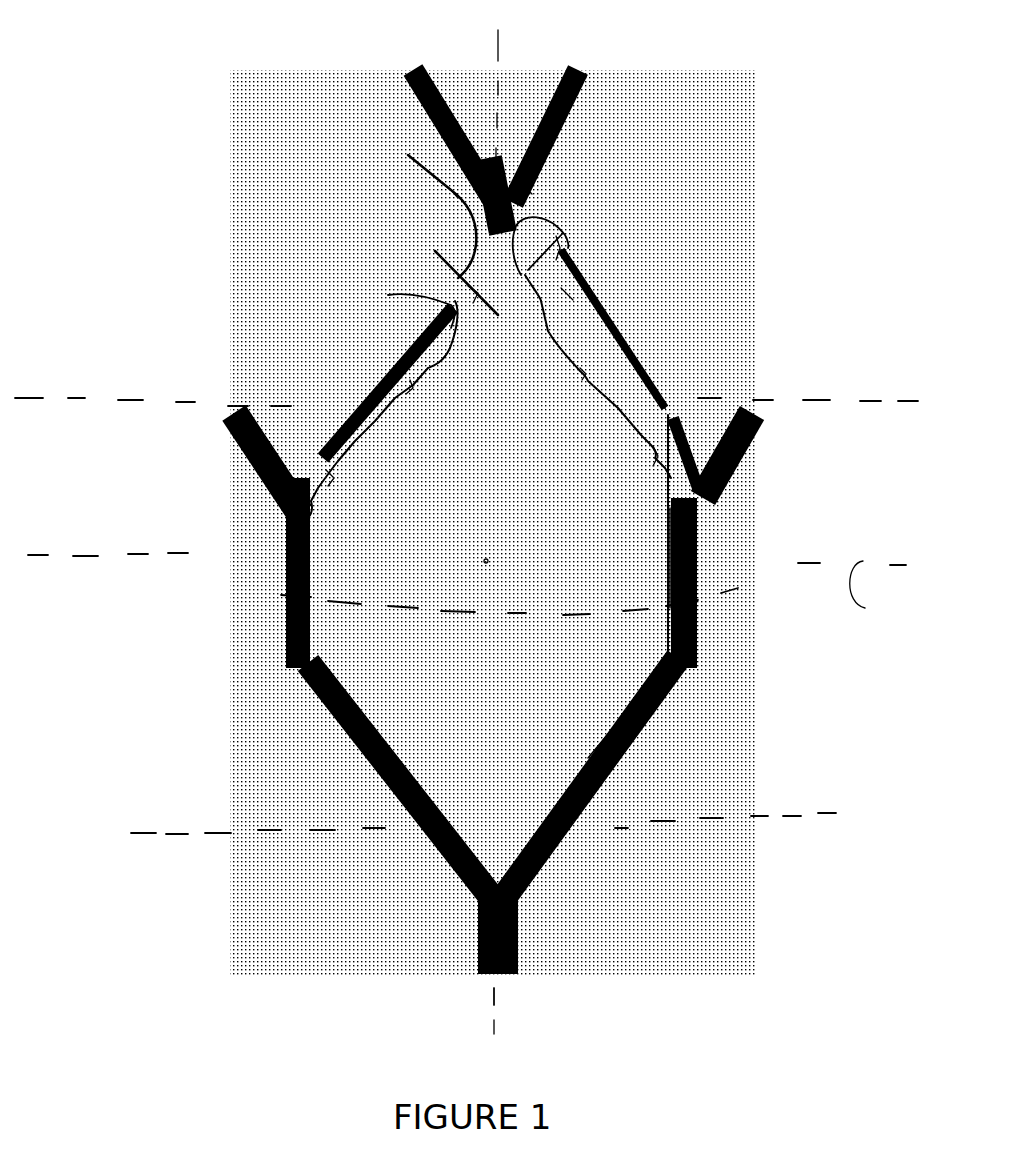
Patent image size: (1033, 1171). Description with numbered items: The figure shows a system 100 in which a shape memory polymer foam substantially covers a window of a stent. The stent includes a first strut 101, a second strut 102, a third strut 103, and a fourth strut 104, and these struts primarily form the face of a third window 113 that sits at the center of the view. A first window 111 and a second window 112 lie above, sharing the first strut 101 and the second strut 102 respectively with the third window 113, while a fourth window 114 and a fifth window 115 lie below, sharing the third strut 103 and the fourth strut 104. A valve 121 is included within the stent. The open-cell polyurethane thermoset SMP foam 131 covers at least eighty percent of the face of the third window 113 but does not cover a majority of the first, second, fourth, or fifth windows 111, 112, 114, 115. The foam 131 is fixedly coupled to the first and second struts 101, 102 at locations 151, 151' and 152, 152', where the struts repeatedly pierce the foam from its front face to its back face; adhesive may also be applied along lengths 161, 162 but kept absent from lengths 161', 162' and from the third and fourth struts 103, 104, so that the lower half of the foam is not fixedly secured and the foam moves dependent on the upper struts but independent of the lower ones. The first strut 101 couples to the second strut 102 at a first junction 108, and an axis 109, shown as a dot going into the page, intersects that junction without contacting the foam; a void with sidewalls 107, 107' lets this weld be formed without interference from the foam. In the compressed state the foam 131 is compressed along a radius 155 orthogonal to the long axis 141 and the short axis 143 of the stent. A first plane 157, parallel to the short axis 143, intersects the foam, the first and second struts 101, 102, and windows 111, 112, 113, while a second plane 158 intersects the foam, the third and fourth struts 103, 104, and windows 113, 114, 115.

The system 100 is at (867, 171).
The first strut 101 is at (458, 237).
The second strut 102 is at (515, 218).
The third strut 103 is at (352, 750).
The fourth strut 104 is at (608, 777).
The sidewall 107 is at (398, 153).
The sidewall 107' is at (670, 147).
The first junction 108 is at (518, 177).
The axis 109 is at (520, 181).
The first window 111 is at (312, 250).
The second window 112 is at (680, 126).
The third window 113 is at (680, 563).
The fourth window 114 is at (327, 898).
The fifth window 115 is at (665, 895).
The valve 121 is at (242, 576).
The SMP foam 131 is at (532, 469).
The long axis 141 is at (483, 1020).
The short axis 143 is at (889, 592).
The location 151 is at (348, 415).
The location 151' is at (350, 303).
The location 152 is at (685, 364).
The location 152' is at (635, 274).
The radius 155 is at (480, 552).
The first plane 157 is at (118, 390).
The second plane 158 is at (173, 827).
The length 161 is at (425, 394).
The length 161' is at (424, 402).
The length 162 is at (565, 384).
The length 162' is at (614, 362).